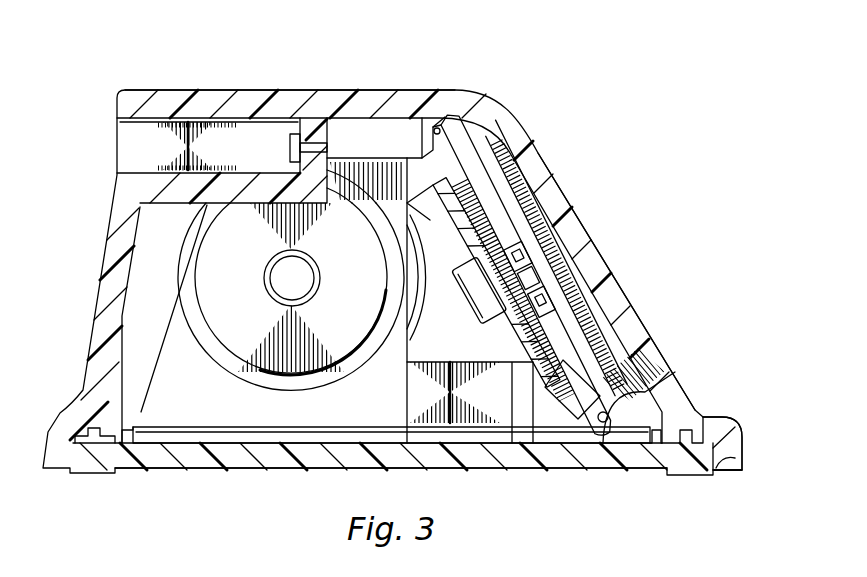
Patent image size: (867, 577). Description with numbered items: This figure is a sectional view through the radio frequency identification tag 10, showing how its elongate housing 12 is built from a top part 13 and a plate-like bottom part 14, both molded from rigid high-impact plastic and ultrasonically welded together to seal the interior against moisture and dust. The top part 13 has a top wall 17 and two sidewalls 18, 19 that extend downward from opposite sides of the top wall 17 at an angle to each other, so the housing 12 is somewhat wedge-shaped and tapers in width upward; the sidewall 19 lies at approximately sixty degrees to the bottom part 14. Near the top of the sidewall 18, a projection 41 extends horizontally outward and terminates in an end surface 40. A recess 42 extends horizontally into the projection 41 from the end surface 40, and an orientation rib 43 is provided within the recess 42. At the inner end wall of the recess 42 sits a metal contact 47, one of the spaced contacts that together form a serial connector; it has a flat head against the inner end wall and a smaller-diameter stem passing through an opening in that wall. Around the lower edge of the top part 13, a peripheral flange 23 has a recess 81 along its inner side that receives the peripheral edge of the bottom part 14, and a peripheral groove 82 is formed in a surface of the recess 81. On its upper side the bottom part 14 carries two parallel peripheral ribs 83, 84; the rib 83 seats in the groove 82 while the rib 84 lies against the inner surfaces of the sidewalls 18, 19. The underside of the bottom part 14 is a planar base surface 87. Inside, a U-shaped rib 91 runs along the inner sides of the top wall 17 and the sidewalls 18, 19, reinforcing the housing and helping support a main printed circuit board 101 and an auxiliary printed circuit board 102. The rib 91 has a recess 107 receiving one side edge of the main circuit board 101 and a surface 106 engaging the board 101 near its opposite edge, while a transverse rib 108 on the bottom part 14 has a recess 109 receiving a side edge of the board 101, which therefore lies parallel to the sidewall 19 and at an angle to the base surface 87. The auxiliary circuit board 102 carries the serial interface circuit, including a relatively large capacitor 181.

The radio frequency identification tag 10 is at (634, 170).
The housing 12 is at (492, 97).
The top part 13 is at (519, 125).
The bottom part 14 is at (287, 470).
The top wall 17 is at (320, 90).
The sidewall 18 is at (96, 302).
The sidewall 19 is at (620, 288).
The peripheral flange 23 is at (744, 436).
The end surface 40 is at (117, 106).
The projection 41 is at (137, 90).
The recess 42 is at (128, 175).
The orientation rib 43 is at (128, 124).
The metal contact 47 is at (288, 150).
The recess 81 is at (723, 478).
The peripheral groove 82 is at (718, 420).
The peripheral rib 83 is at (94, 445).
The peripheral rib 84 is at (148, 425).
The planar base surface 87 is at (203, 472).
The U-shaped rib 91 is at (386, 147).
The main printed circuit board 101 is at (557, 347).
The auxiliary printed circuit board 102 is at (387, 412).
The surface 106 is at (669, 395).
The recess 107 is at (430, 137).
The transverse rib 108 is at (490, 455).
The recess 109 is at (599, 465).
The capacitor 181 is at (369, 292).